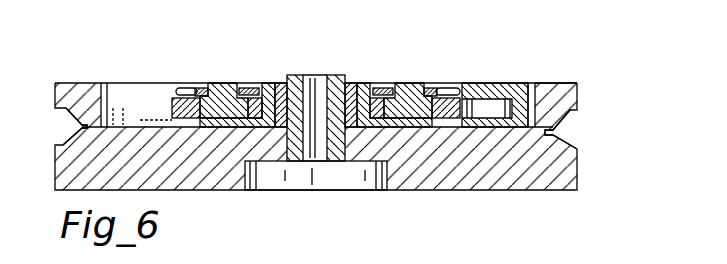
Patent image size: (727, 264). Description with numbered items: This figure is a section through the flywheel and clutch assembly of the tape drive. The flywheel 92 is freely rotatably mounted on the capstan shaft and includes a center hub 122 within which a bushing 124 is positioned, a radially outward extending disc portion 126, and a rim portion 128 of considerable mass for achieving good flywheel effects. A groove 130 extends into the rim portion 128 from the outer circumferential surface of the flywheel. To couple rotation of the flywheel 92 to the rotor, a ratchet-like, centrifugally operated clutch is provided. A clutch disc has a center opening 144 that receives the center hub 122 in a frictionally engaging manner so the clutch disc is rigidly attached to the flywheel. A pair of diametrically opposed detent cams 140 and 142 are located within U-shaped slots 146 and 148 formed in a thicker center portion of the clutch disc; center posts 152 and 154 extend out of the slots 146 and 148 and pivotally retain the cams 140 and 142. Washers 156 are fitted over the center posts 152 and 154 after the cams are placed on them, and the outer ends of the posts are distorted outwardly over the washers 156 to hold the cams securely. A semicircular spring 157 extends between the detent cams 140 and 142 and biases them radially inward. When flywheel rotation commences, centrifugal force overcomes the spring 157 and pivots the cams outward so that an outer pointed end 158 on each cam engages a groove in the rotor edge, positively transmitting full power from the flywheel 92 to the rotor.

The flywheel 92 is at (581, 171).
The center hub 122 is at (364, 81).
The bushing 124 is at (337, 82).
The disc portion 126 is at (486, 180).
The rim portion 128 is at (577, 89).
The groove 130 is at (574, 140).
The detent cam 140 is at (172, 105).
The detent cam 142 is at (488, 103).
The center opening 144 is at (287, 78).
The slot 146 is at (278, 84).
The slot 148 is at (367, 84).
The center post 152 is at (238, 87).
The center post 154 is at (433, 84).
The washer 156 is at (200, 87).
The semicircular spring 157 is at (196, 86).
The outer pointed end 158 is at (565, 83).